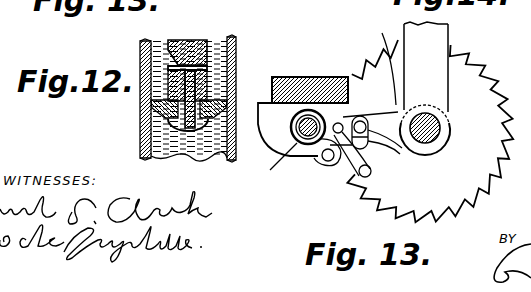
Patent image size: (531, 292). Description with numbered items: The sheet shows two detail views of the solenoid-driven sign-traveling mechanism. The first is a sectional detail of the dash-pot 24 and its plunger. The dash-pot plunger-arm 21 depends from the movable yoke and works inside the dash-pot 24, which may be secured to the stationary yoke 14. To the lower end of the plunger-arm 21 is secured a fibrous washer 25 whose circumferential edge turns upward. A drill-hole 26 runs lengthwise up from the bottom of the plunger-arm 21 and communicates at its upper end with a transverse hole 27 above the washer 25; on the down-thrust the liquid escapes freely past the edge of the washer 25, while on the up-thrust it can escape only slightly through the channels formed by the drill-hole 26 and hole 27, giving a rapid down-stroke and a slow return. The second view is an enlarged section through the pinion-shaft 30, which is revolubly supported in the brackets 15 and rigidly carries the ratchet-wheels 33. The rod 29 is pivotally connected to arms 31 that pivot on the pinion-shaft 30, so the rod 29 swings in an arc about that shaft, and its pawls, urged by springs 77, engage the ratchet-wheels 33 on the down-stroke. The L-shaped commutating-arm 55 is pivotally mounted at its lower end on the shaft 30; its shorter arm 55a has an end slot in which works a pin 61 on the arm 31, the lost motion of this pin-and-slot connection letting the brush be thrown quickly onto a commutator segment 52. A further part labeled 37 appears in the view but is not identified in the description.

In FIG. 13, the stationary yoke 14 is at (297, 77).
In FIG. 13, the brackets 15 is at (288, 129).
In FIG. 12, the dash-pot plunger-arm 21 is at (195, 42).
In FIG. 12, the dash-pot 24 is at (236, 60).
In FIG. 12, the fibrous washer 25 is at (160, 115).
In FIG. 12, the drill-hole 26 is at (215, 87).
In FIG. 12, the hole 27 is at (175, 62).
In FIG. 13, the rod 29 is at (274, 160).
In FIG. 13, the pinion-shaft 30 is at (448, 140).
In FIG. 13, the arms 31 is at (372, 70).
In FIG. 13, the ratchet-wheels 33 is at (430, 131).
In FIG. 13, the slot 37 is at (372, 140).
In FIG. 13, the commutator segment 52 is at (316, 160).
In FIG. 13, the commutating-arm 55 is at (426, 67).
In FIG. 13, the shorter arm 55a is at (377, 58).
In FIG. 13, the pin 61 is at (404, 151).
In FIG. 13, the springs 77 is at (352, 180).